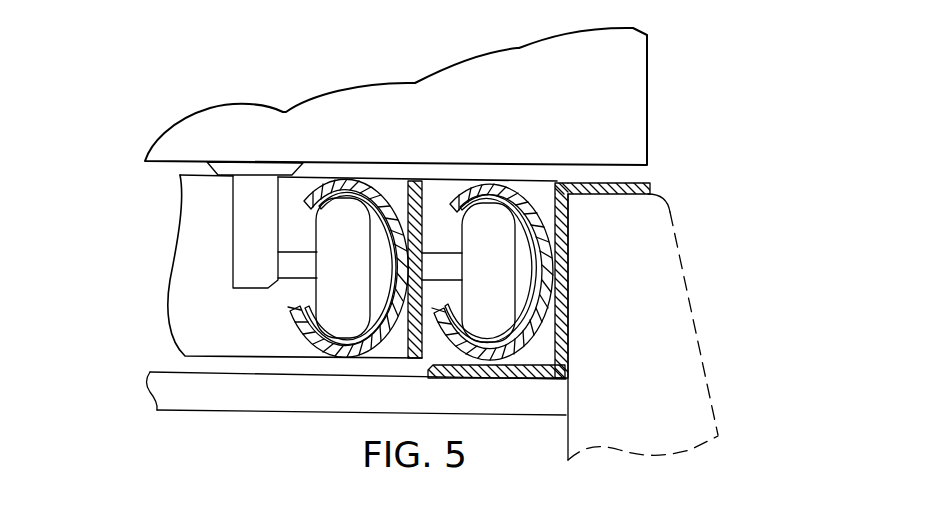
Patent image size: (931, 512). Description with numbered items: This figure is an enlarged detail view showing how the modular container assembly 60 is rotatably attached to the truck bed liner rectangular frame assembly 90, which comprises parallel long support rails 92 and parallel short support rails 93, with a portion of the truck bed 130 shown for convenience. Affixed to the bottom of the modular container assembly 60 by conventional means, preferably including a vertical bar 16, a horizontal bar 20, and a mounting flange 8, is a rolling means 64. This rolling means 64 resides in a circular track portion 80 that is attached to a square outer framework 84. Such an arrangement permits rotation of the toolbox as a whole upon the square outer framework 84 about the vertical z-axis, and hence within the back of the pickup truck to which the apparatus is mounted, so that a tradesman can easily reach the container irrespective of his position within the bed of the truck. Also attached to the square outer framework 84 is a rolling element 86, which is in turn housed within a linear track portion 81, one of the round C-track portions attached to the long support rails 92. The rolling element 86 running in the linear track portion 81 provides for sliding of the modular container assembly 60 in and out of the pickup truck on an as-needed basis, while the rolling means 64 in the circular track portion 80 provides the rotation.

The mounting flange 8 is at (252, 167).
The vertical bar 16 is at (245, 217).
The horizontal bar 20 is at (297, 270).
The modular container assembly 60 is at (621, 83).
The rolling means 64 is at (357, 274).
The circular track portion 80 is at (292, 325).
The linear track portion 81 is at (508, 190).
The square outer framework 84 is at (426, 182).
The rolling element 86 is at (507, 276).
The rectangular frame assembly 90 is at (690, 183).
The long support rails 92 is at (650, 182).
The short support rails 93 is at (288, 392).
The truck bed 130 is at (663, 278).